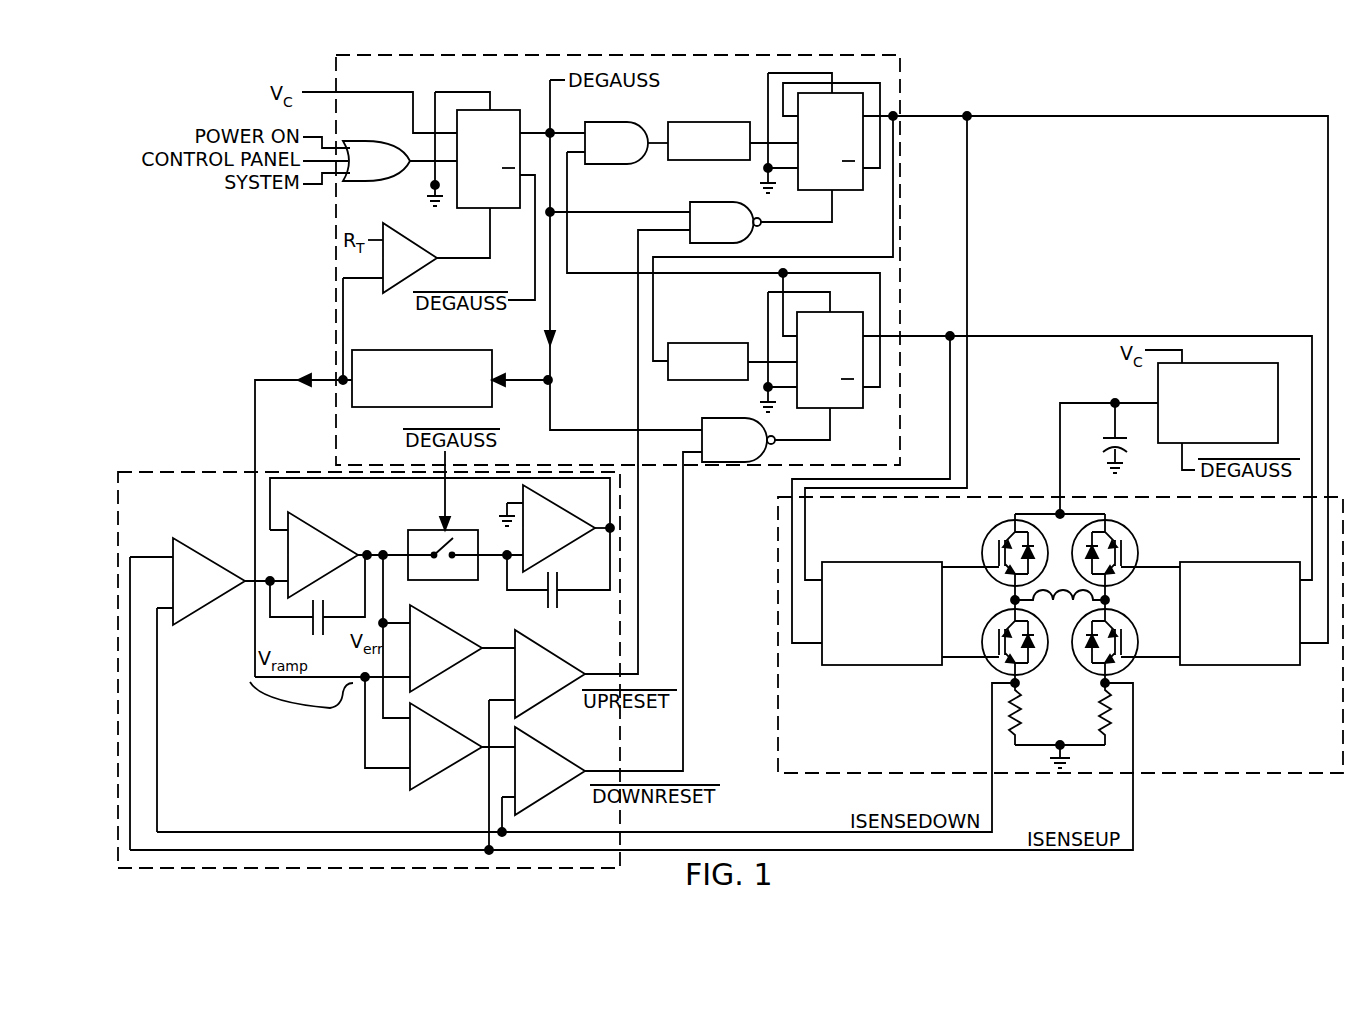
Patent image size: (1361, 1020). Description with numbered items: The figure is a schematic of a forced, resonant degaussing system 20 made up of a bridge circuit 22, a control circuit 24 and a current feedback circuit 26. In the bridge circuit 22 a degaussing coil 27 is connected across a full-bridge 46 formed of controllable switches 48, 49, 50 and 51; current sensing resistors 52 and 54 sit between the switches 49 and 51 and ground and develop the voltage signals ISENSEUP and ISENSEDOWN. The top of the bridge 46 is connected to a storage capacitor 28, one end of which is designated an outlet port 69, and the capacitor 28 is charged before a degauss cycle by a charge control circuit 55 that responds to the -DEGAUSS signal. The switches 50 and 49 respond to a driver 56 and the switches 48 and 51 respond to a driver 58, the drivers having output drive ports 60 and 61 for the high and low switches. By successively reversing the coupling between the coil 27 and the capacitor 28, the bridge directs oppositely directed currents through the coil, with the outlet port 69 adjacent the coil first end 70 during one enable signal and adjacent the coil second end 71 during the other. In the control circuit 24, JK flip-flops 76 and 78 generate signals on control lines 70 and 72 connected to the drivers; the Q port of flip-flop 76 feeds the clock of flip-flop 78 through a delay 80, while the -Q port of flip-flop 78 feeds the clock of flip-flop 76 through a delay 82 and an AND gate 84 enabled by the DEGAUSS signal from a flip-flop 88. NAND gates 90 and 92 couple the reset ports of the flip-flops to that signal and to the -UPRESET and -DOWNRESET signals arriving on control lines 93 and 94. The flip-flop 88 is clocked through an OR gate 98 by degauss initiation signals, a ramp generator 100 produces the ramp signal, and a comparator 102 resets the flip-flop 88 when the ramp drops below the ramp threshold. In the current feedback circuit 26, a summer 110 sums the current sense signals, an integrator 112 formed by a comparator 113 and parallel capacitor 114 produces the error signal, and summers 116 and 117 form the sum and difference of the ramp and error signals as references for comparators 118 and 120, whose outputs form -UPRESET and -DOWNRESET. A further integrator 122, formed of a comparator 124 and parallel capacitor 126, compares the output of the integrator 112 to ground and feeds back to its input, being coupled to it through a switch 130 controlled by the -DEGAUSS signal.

The forced, resonant degaussing system 20 is at (266, 300).
The bridge circuit 22 is at (1037, 495).
The control circuit 24 is at (903, 240).
The current feedback circuit 26 is at (178, 472).
The degaussing coil 27 is at (1060, 611).
The storage capacitor 28 is at (1103, 438).
The full-bridge 46 is at (1000, 496).
The controllable switch 48 is at (1009, 554).
The controllable switch 49 is at (1113, 641).
The controllable switch 50 is at (1112, 554).
The controllable switch 51 is at (1010, 641).
The current sensing resistor 52 is at (1091, 714).
The current sensing resistor 54 is at (1030, 714).
The charge control circuit 55 is at (1208, 363).
The driver 56 is at (1266, 665).
The driver 58 is at (870, 665).
The output drive port 60 is at (986, 567).
The output drive port 61 is at (976, 661).
The outlet port 69 is at (1140, 440).
The coil first end 70 is at (945, 116).
The coil second end 71 is at (1104, 601).
The control line 72 is at (920, 336).
The JK flip-flop 76 is at (832, 154).
The JK flip-flop 78 is at (830, 348).
The delay 80 is at (690, 343).
The delay 82 is at (690, 122).
The AND gate 84 is at (616, 143).
The flip-flop 88 is at (488, 147).
The NAND gate 90 is at (725, 222).
The NAND gate 92 is at (738, 440).
The control line 93 is at (644, 512).
The control line 94 is at (689, 512).
The OR gate 98 is at (376, 161).
The ramp generator 100 is at (432, 352).
The comparator 102 is at (433, 258).
The summer 110 is at (209, 581).
The integrator 112 is at (341, 537).
The comparator 113 is at (323, 555).
The parallel capacitor 114 is at (317, 595).
The summer 116 is at (446, 648).
The summer 117 is at (446, 746).
The comparator 118 is at (550, 674).
The comparator 120 is at (550, 771).
The integrator 122 is at (552, 502).
The comparator 124 is at (559, 528).
The parallel capacitor 126 is at (558, 568).
The switch 130 is at (436, 580).